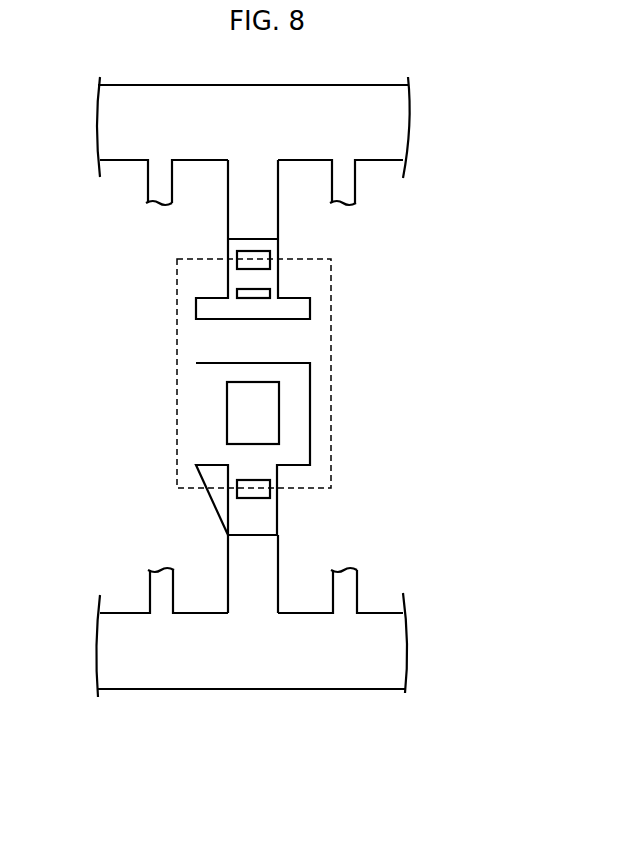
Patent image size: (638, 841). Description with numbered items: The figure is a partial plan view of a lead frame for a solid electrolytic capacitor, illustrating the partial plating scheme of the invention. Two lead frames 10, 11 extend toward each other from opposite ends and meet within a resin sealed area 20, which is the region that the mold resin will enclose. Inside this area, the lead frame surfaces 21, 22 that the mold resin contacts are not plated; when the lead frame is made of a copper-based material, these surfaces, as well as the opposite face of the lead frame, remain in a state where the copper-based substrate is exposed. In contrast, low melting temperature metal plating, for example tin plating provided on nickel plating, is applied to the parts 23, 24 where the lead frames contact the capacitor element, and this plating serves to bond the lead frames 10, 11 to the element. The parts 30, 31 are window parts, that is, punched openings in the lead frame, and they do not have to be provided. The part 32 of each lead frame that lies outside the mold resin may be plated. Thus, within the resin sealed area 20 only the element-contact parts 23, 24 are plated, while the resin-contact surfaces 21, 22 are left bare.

The lead frame 10 is at (267, 215).
The lead frame 11 is at (247, 568).
The resin sealed area 20 is at (170, 317).
The lead frame surface 21 is at (237, 246).
The lead frame surface 22 is at (213, 400).
The plated contact part 23 is at (252, 295).
The plated contact part 24 is at (263, 422).
The window part 30 is at (270, 258).
The window part 31 is at (253, 497).
The plated outer lead frame part 32 is at (388, 123).